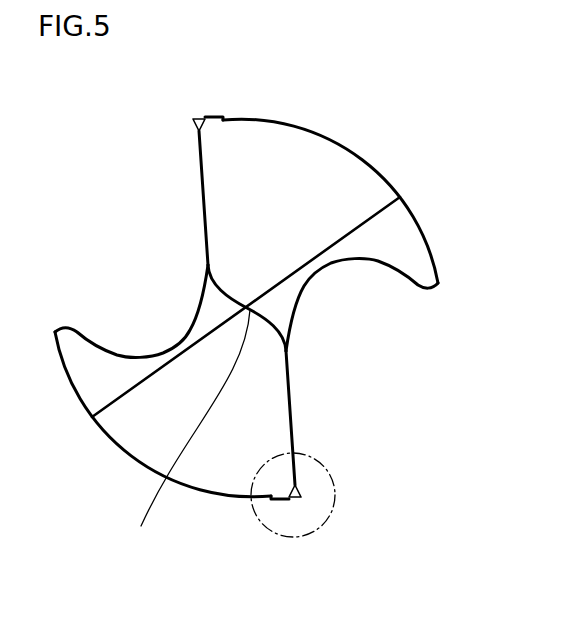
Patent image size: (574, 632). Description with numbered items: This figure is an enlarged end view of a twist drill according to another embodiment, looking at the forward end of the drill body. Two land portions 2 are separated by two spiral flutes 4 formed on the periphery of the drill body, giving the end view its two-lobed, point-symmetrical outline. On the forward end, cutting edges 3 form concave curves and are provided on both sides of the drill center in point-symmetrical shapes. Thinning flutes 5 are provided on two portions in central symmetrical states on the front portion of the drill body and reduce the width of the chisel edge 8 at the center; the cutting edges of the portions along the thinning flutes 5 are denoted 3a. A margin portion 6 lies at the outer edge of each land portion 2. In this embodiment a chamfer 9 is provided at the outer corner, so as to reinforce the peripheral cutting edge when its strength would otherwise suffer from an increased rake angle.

The land portion 2 is at (328, 155).
The cutting edge 3 is at (198, 163).
The cutting edge of portion along thinning flute 3a is at (270, 328).
The spiral flute 4 is at (147, 230).
The thinning flute 5 is at (213, 310).
The margin portion 6 is at (213, 115).
The chisel edge 8 is at (190, 429).
The chamfer 9 is at (198, 121).